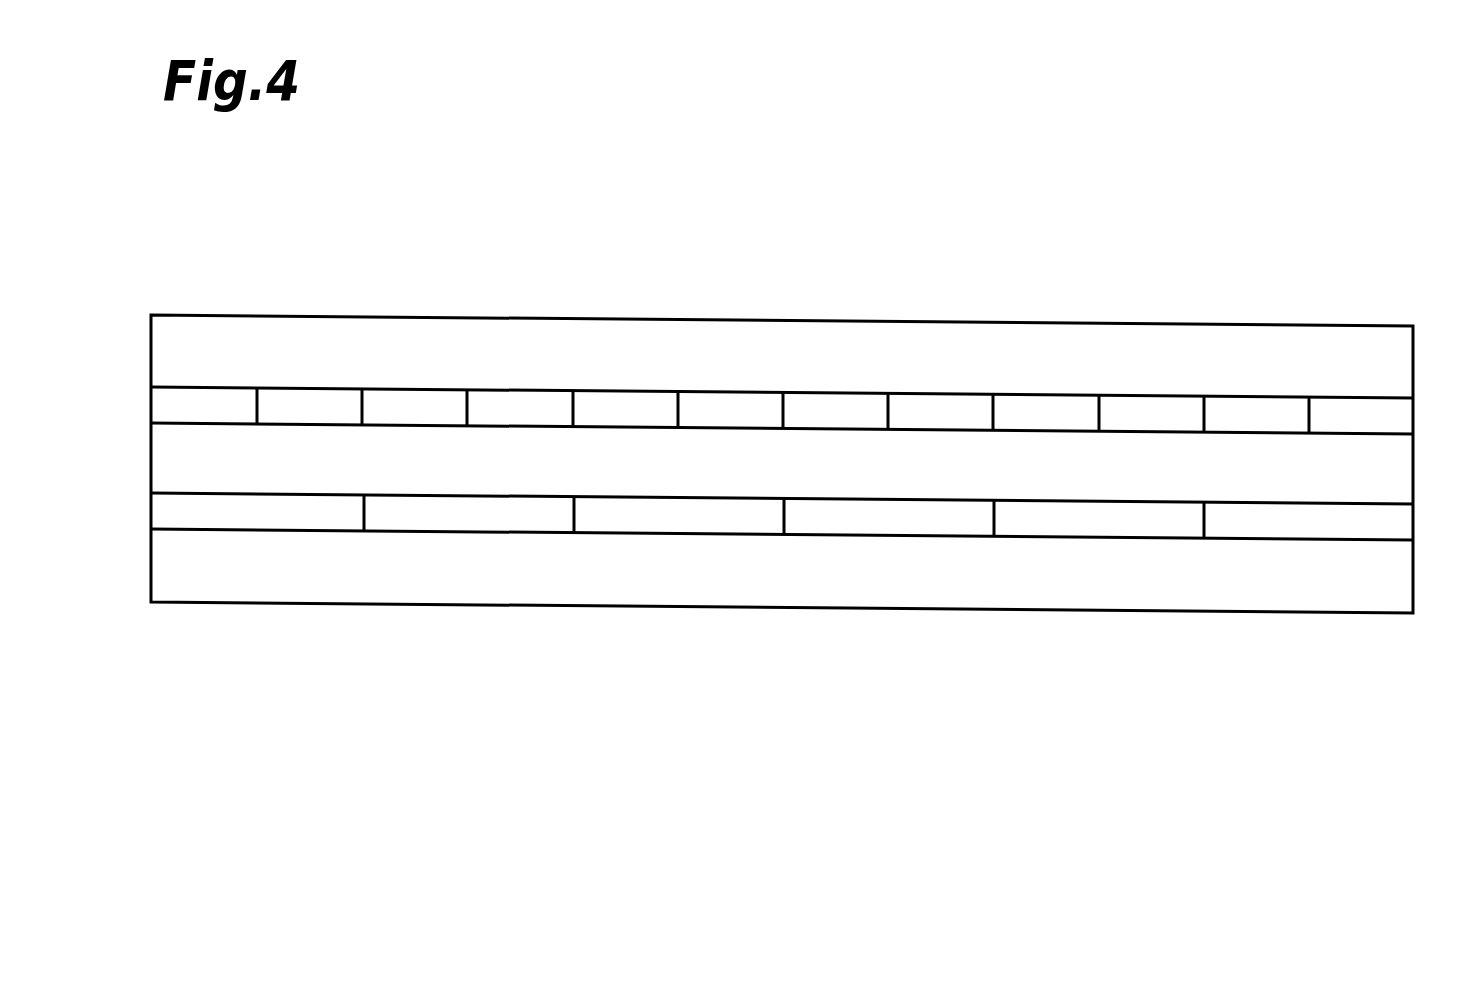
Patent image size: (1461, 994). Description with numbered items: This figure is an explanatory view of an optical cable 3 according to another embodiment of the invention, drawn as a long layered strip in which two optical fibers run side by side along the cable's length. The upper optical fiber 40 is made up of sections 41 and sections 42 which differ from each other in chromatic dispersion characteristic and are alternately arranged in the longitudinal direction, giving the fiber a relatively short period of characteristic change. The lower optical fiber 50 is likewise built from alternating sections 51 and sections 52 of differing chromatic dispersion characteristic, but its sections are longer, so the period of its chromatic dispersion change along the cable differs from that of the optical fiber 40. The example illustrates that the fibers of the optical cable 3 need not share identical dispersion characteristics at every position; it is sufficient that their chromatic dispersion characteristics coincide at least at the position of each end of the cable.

The optical cable 3 is at (1000, 323).
The optical fiber 40 is at (770, 392).
The section 41 is at (208, 393).
The section 42 is at (315, 394).
The optical fiber 50 is at (778, 533).
The section 51 is at (237, 523).
The section 52 is at (448, 525).